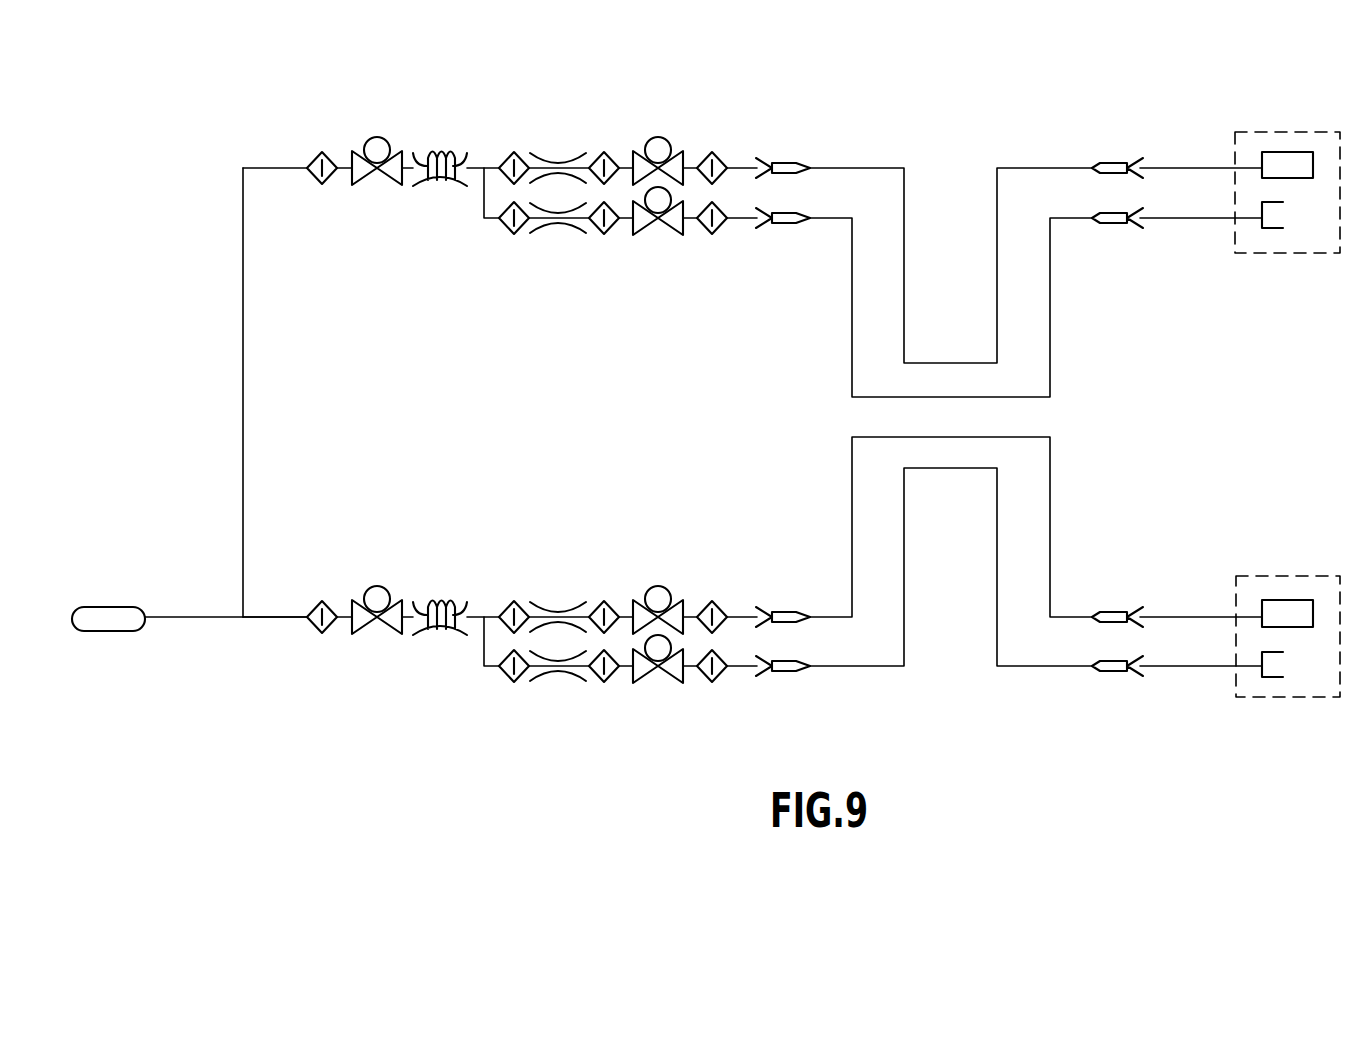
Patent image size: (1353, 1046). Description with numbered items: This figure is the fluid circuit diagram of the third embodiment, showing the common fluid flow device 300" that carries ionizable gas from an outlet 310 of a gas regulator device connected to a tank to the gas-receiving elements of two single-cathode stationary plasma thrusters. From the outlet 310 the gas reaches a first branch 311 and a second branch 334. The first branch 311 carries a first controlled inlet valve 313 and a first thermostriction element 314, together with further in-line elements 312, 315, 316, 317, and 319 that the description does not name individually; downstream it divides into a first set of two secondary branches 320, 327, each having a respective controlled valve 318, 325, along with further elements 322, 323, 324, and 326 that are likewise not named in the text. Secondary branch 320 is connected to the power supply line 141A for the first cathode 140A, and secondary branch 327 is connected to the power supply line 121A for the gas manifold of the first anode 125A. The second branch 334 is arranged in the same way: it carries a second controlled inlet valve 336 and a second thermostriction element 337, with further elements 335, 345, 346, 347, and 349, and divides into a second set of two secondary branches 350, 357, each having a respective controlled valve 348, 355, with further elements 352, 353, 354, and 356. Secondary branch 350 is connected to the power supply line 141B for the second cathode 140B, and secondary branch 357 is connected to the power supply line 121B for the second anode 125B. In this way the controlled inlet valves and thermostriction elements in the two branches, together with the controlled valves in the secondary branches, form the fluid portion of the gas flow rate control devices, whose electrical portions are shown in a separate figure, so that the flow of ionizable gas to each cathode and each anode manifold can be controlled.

The common fluid flow device 300 is at (224, 331).
The outlet 310 is at (95, 607).
The first branch 311 is at (245, 380).
The filter 312 is at (314, 153).
The first controlled inlet valve 313 is at (375, 137).
The first thermostriction element 314 is at (440, 150).
The filter 315 is at (504, 152).
The flow restrictor 316 is at (555, 156).
The filter 317 is at (598, 152).
The controlled valve 318 is at (657, 136).
The filter 319 is at (708, 153).
The secondary branch 320 is at (758, 160).
The filter 322 is at (504, 235).
The flow restrictor 323 is at (555, 232).
The filter 324 is at (598, 235).
The controlled valve 325 is at (655, 230).
The filter 326 is at (708, 234).
The secondary branch 327 is at (758, 228).
The second branch 334 is at (262, 622).
The filter 335 is at (314, 602).
The second controlled inlet valve 336 is at (375, 586).
The second thermostriction element 337 is at (440, 599).
The filter 345 is at (504, 601).
The flow restrictor 346 is at (555, 604).
The filter 347 is at (598, 601).
The controlled valve 348 is at (657, 585).
The filter 349 is at (708, 602).
The secondary branch 350 is at (758, 609).
The filter 352 is at (504, 683).
The flow restrictor 353 is at (555, 680).
The filter 354 is at (598, 683).
The controlled valve 355 is at (655, 678).
The filter 356 is at (708, 682).
The secondary branch 357 is at (758, 676).
The power supply line 141A is at (1175, 165).
The power supply line 121A is at (1170, 220).
The first cathode 140A is at (1281, 152).
The first anode 125A is at (1283, 232).
The power supply line 141B is at (1175, 614).
The power supply line 121B is at (1170, 668).
The second cathode 140B is at (1281, 600).
The second anode 125B is at (1283, 680).